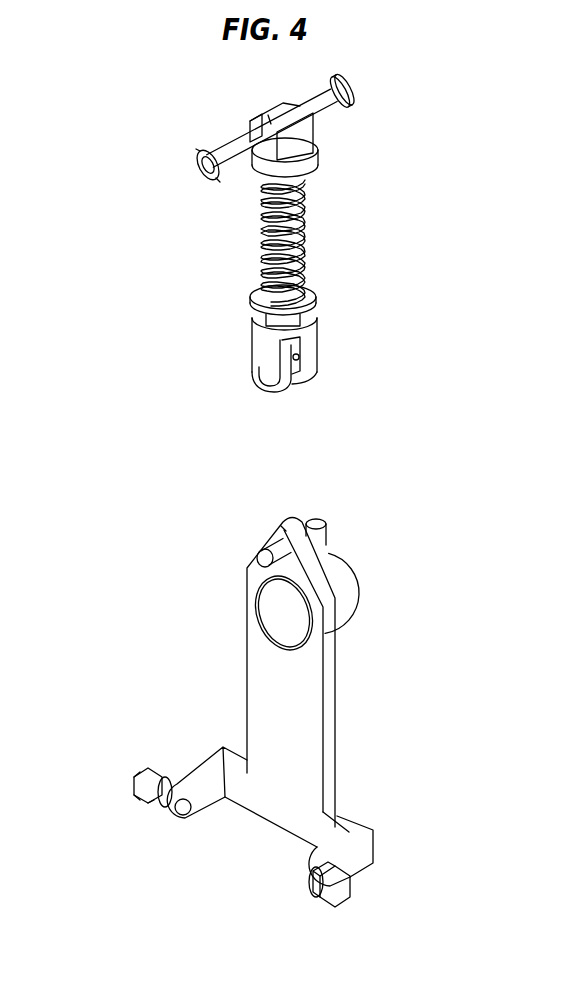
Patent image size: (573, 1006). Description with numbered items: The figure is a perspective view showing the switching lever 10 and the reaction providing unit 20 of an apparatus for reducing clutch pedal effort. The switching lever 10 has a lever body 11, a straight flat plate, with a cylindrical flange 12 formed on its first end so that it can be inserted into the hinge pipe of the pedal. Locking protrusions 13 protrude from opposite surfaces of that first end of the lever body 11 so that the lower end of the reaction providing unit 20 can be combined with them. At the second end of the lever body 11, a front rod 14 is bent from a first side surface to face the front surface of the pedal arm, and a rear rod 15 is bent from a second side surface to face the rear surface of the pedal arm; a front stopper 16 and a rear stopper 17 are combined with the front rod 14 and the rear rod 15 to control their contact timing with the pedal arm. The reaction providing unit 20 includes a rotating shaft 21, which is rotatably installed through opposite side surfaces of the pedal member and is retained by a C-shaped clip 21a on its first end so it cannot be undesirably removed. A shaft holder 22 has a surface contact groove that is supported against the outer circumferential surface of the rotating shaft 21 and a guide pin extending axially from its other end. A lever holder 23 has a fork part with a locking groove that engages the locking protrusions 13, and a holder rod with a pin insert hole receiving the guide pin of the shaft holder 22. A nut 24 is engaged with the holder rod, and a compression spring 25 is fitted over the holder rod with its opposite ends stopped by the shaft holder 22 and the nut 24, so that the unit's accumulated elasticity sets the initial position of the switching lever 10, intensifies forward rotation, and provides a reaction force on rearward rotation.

The switching lever 10 is at (371, 733).
The lever body 11 is at (258, 672).
The cylindrical flange 12 is at (336, 585).
The locking protrusions 13 is at (272, 547).
The front rod 14 is at (205, 767).
The rear rod 15 is at (360, 853).
The front stopper 16 is at (140, 785).
The rear stopper 17 is at (338, 893).
The reaction providing unit 20 is at (338, 181).
The rotating shaft 21 is at (232, 148).
The C-shaped clip 21a is at (208, 177).
The shaft holder 22 is at (305, 152).
The lever holder 23 is at (305, 357).
The nut 24 is at (314, 297).
The compression spring 25 is at (302, 232).